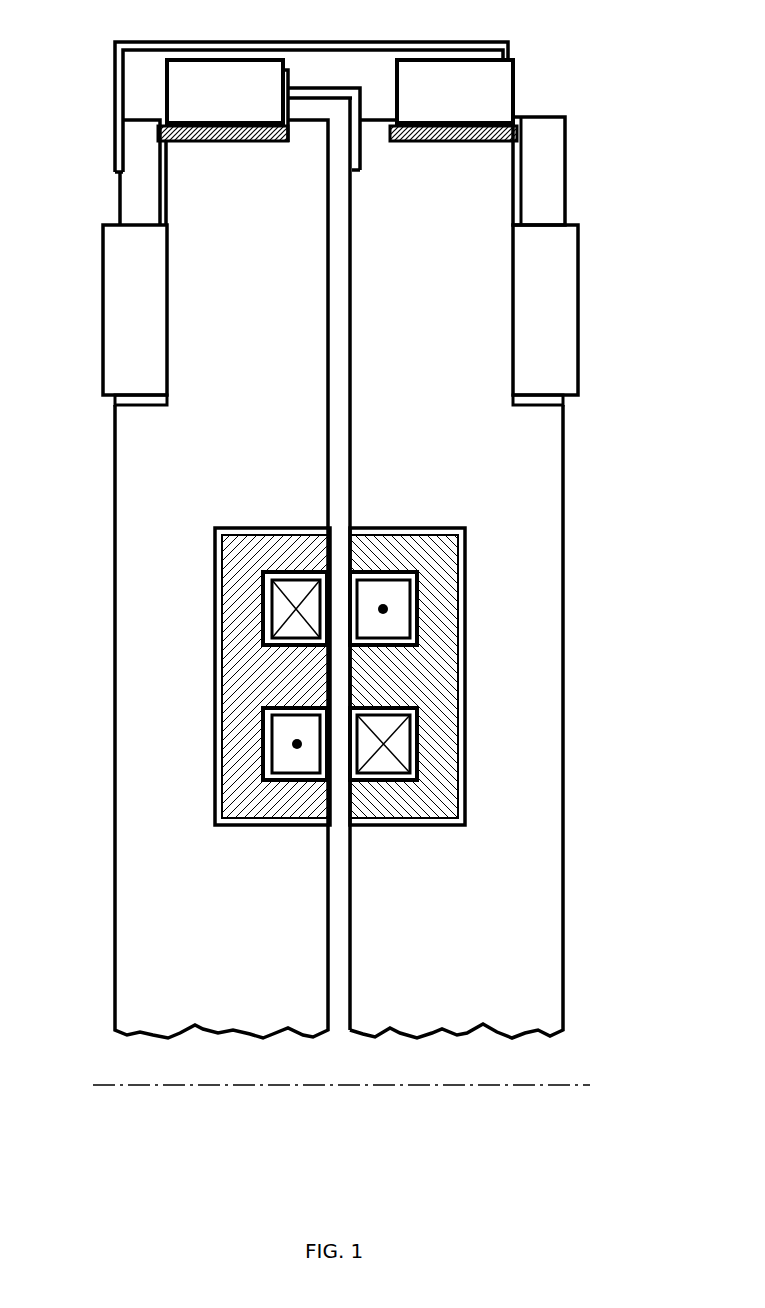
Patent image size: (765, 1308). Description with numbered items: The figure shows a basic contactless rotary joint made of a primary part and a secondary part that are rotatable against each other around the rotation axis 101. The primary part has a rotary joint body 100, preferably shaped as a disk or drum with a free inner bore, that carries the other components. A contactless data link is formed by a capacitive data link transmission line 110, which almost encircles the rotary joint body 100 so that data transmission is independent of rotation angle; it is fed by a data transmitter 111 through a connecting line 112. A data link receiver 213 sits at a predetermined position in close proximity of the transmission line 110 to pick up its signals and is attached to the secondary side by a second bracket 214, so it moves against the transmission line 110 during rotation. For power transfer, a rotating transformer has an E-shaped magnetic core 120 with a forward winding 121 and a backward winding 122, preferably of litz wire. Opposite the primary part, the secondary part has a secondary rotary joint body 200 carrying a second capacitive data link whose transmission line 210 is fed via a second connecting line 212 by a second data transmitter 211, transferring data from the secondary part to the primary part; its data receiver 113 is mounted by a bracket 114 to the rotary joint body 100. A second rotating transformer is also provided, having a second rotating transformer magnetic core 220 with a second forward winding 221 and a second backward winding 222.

The rotary joint body 100 is at (117, 870).
The rotation axis 101 is at (313, 1087).
The capacitive data link transmission line 110 is at (253, 143).
The data transmitter 111 is at (113, 308).
The connecting line 112 is at (168, 176).
The data receiver 113 is at (458, 72).
The bracket 114 is at (508, 46).
The magnetic core 120 is at (217, 668).
The forward winding 121 is at (295, 588).
The backward winding 122 is at (297, 762).
The secondary rotary joint body 200 is at (554, 871).
The transmission line 210 is at (423, 143).
The second data transmitter 211 is at (565, 307).
The second connecting line 212 is at (512, 183).
The data link receiver 213 is at (223, 72).
The second bracket 214 is at (320, 93).
The second rotating transformer magnetic core 220 is at (467, 665).
The second forward winding 221 is at (381, 590).
The second backward winding 222 is at (380, 760).